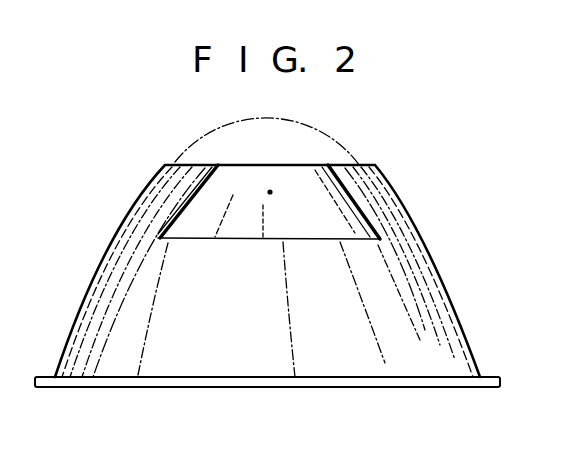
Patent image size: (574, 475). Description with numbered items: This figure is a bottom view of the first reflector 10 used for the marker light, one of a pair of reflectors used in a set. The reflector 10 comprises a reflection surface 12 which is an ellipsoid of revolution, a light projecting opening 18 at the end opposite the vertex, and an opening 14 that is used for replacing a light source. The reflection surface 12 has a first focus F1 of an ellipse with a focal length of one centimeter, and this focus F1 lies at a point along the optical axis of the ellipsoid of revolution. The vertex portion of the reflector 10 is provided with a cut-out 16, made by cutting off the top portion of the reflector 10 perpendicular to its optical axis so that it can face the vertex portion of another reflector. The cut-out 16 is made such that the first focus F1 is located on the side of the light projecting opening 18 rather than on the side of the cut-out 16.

The first reflector 10 is at (387, 158).
The reflection surface 12 is at (424, 243).
The opening 14 is at (302, 173).
The cut-out 16 is at (200, 165).
The light projecting opening 18 is at (258, 392).
The first focus F1 is at (255, 192).